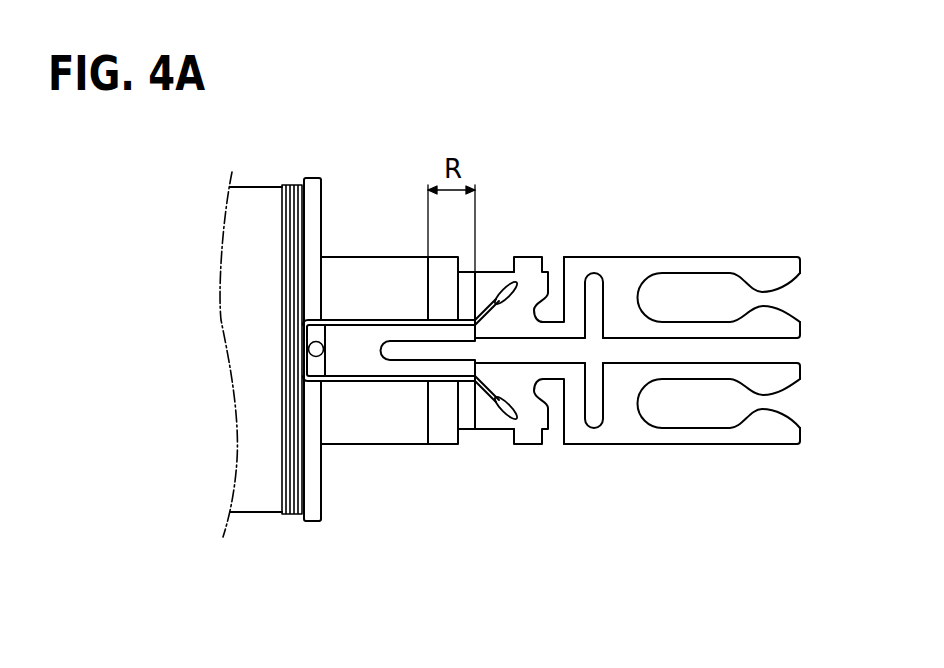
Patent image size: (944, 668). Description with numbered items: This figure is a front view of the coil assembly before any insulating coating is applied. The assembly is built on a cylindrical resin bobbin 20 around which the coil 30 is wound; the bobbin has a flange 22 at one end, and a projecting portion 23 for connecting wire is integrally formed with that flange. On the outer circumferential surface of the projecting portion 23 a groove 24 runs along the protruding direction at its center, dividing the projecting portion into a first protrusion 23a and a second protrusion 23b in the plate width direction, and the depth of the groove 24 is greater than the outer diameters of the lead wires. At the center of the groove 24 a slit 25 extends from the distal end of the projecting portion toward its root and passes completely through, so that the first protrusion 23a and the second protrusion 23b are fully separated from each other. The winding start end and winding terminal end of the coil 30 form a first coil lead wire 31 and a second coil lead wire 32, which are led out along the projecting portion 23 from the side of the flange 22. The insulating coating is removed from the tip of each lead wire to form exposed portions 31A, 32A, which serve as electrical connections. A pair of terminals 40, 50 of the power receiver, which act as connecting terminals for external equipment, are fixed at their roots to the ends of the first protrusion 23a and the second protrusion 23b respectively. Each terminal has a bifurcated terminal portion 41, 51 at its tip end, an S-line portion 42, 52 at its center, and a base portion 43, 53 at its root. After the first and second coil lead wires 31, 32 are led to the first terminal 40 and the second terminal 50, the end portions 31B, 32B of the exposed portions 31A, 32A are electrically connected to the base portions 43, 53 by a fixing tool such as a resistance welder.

The bobbin 20 is at (315, 178).
The flange 22 is at (312, 521).
The projecting portion 23 is at (138, 308).
The first protrusion 23a is at (332, 292).
The second protrusion 23b is at (332, 408).
The groove 24 is at (348, 354).
The slit 25 is at (407, 351).
The coil 30 is at (295, 184).
The first coil lead wire 31 is at (377, 320).
The exposed portion 31A is at (488, 295).
The end portion 31B is at (513, 301).
The second coil lead wire 32 is at (372, 382).
The exposed portion 32A is at (486, 404).
The end portion 32B is at (513, 400).
The first terminal 40 is at (637, 233).
The terminal portion 41 is at (718, 249).
The S-line portion 42 is at (575, 303).
The base portion 43 is at (524, 283).
The second terminal 50 is at (637, 471).
The terminal portion 51 is at (718, 456).
The S-line portion 52 is at (575, 398).
The base portion 53 is at (524, 418).